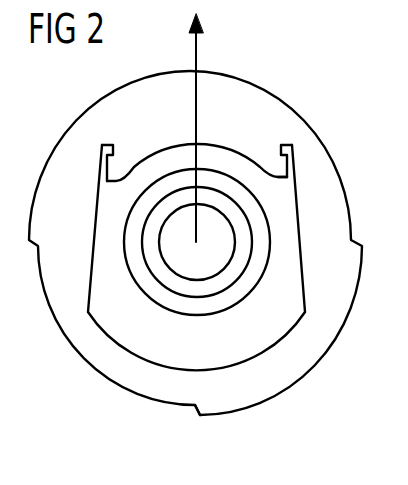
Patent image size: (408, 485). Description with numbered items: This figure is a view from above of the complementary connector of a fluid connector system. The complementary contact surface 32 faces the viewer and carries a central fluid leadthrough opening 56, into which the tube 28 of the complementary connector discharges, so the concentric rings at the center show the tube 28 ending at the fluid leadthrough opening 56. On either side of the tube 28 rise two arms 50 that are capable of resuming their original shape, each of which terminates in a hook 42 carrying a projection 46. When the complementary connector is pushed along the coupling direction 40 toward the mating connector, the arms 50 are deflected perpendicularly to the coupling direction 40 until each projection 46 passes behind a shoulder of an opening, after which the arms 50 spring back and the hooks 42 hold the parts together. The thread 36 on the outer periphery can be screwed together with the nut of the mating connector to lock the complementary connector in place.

The tube 28 is at (153, 262).
The complementary contact surface 32 is at (284, 297).
The thread 36 is at (228, 413).
The coupling direction 40 is at (199, 58).
The hook 42 is at (287, 143).
The projection 46 is at (277, 157).
The arm 50 is at (293, 172).
The fluid leadthrough opening 56 is at (178, 293).